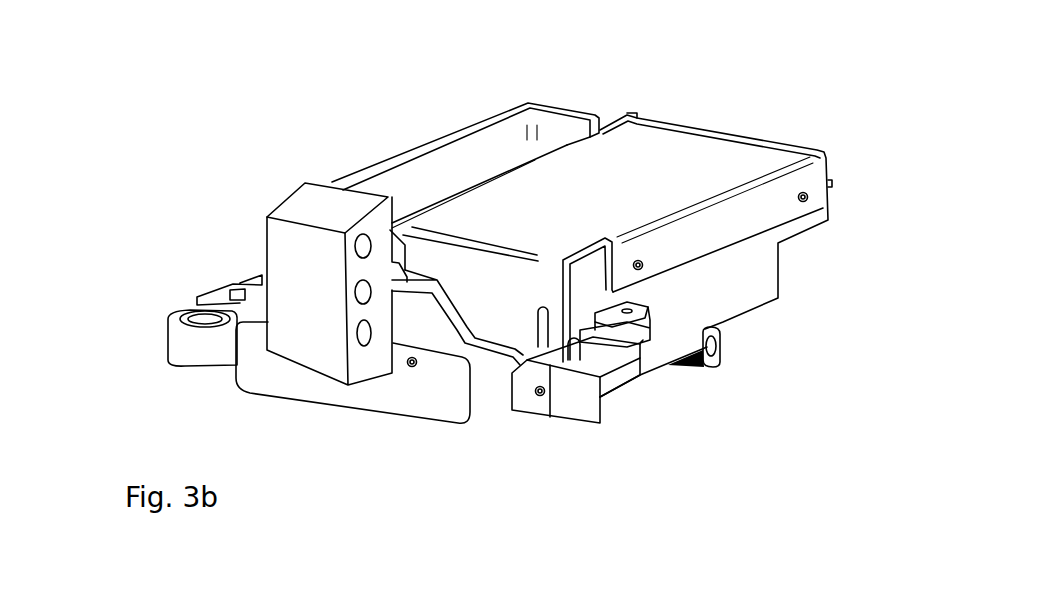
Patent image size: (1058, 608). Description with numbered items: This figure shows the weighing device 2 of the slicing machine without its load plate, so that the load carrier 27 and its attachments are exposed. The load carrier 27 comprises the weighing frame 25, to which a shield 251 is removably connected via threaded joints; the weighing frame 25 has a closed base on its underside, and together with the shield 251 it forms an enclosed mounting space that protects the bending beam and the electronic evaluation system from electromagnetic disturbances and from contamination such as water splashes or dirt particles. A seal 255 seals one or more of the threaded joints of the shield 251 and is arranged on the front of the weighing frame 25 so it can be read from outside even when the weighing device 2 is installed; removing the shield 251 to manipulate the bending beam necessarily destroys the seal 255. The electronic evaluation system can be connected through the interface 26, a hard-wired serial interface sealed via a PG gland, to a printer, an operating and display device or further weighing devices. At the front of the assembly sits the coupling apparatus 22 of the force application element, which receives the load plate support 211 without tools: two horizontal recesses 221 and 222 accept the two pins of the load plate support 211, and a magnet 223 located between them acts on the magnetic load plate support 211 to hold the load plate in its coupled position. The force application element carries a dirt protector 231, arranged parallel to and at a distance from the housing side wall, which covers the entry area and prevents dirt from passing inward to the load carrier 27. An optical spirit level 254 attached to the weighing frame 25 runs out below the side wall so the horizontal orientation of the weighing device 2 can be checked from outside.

The weighing device 2 is at (418, 106).
The coupling apparatus 22 is at (278, 238).
The horizontal recess 221 is at (362, 233).
The horizontal recess 222 is at (362, 340).
The magnet 223 is at (358, 295).
The dirt protector 231 is at (453, 413).
The weighing frame 25 is at (489, 111).
The load plate support 211 is at (560, 2).
The shield 251 is at (712, 155).
The optical spirit level 254 is at (185, 347).
The seal 255 is at (540, 396).
The interface 26 is at (703, 368).
The load carrier 27 is at (813, 300).